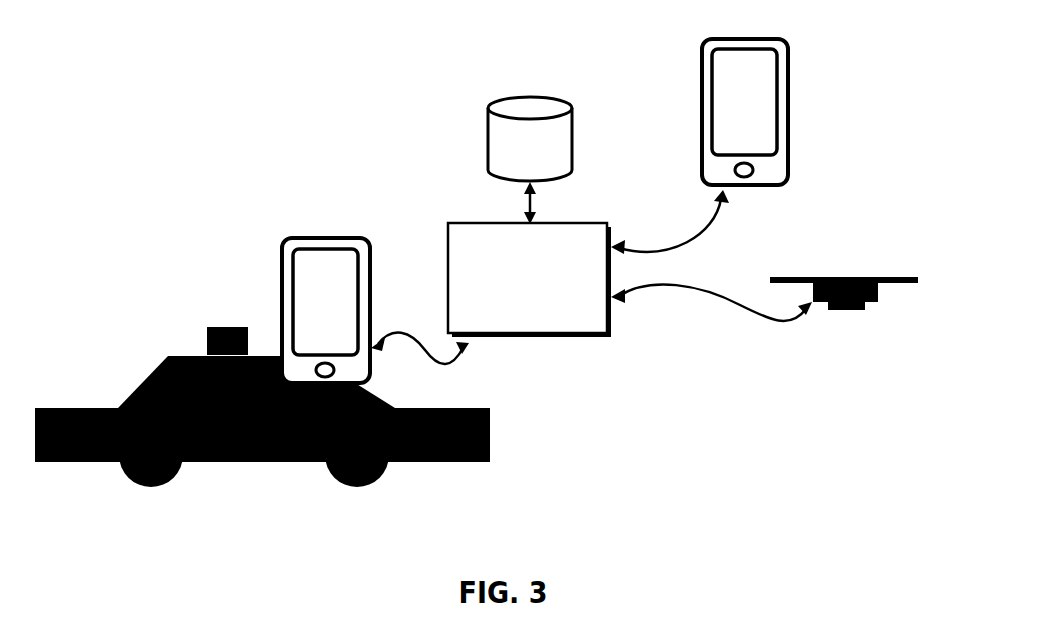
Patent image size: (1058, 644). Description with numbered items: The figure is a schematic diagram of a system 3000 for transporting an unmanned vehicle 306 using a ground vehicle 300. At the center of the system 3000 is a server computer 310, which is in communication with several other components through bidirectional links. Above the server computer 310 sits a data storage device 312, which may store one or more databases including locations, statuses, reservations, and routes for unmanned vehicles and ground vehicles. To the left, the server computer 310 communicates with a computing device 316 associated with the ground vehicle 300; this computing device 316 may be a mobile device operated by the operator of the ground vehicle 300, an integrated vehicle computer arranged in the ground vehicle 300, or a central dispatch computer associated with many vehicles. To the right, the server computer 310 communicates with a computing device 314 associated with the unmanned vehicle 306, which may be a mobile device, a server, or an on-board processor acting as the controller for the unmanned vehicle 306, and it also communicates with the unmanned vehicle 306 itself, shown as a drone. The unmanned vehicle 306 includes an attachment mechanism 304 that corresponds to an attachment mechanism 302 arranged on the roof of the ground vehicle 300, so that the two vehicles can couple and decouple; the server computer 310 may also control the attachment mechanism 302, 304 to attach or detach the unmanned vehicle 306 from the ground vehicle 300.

The ground vehicle 300 is at (56, 462).
The attachment mechanism 302 is at (207, 347).
The attachment mechanism 304 is at (850, 312).
The unmanned vehicle 306 is at (905, 286).
The server computer 310 is at (506, 318).
The data storage device 312 is at (509, 156).
The computing device 314 is at (723, 110).
The computing device 316 is at (304, 318).
The system 3000 is at (652, 399).